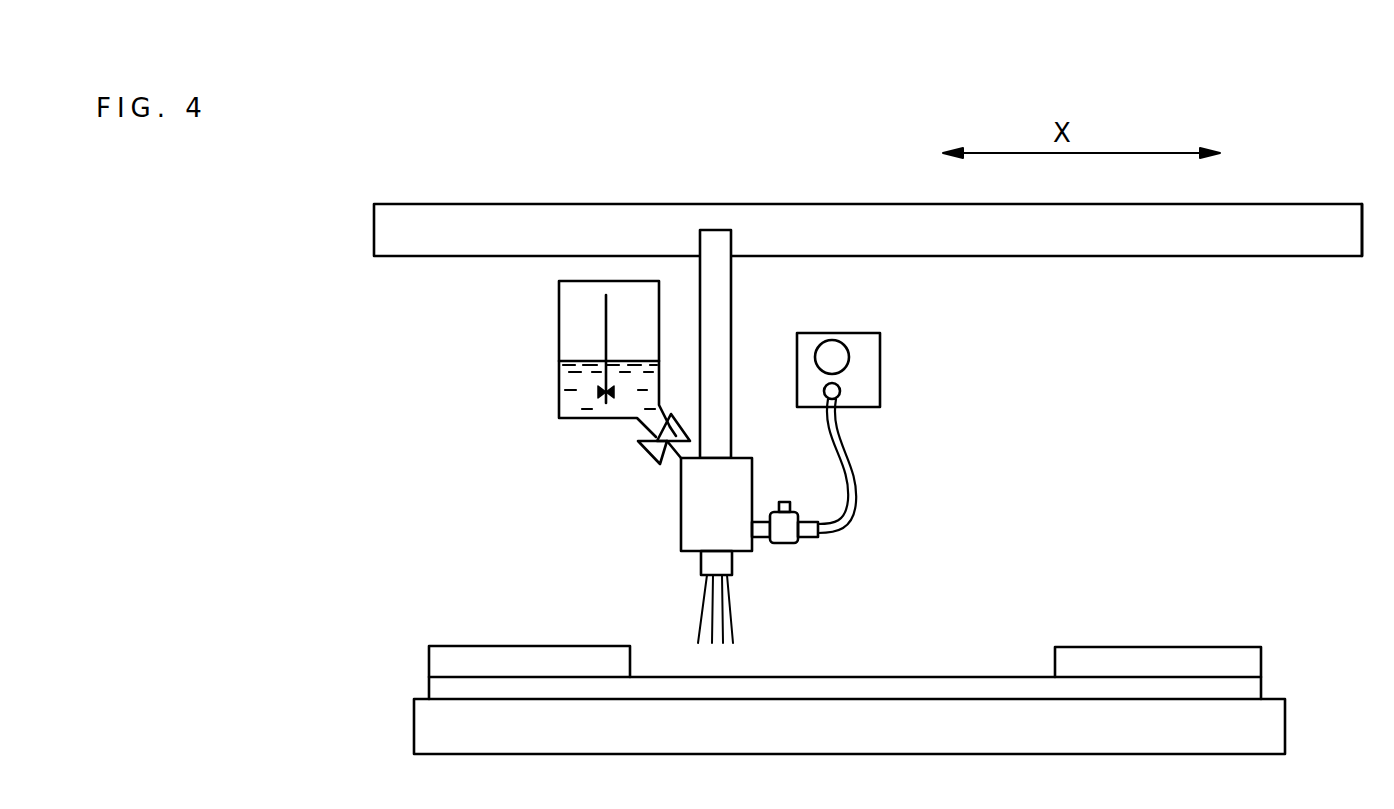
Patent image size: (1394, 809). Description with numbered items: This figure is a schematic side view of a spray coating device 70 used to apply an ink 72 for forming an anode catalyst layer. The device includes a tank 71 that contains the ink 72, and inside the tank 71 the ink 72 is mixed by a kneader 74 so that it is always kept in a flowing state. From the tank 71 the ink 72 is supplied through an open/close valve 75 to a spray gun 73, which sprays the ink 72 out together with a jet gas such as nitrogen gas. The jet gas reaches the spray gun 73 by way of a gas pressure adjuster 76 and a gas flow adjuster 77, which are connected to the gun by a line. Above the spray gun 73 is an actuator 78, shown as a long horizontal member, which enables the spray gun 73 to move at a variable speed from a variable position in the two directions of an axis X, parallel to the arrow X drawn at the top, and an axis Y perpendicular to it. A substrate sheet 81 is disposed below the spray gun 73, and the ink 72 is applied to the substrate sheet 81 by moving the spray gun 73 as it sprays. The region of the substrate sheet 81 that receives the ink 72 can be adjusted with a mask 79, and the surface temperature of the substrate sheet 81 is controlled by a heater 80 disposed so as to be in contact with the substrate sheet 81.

The spray coating device 70 is at (1317, 172).
The tank 71 is at (559, 343).
The ink 72 is at (567, 393).
The spray gun 73 is at (697, 515).
The kneader 74 is at (605, 316).
The open/close valve 75 is at (645, 455).
The gas pressure adjuster 76 is at (868, 352).
The gas flow adjuster 77 is at (787, 533).
The actuator 78 is at (500, 216).
The mask 79 is at (487, 660).
The heater 80 is at (1270, 727).
The substrate sheet 81 is at (1240, 693).